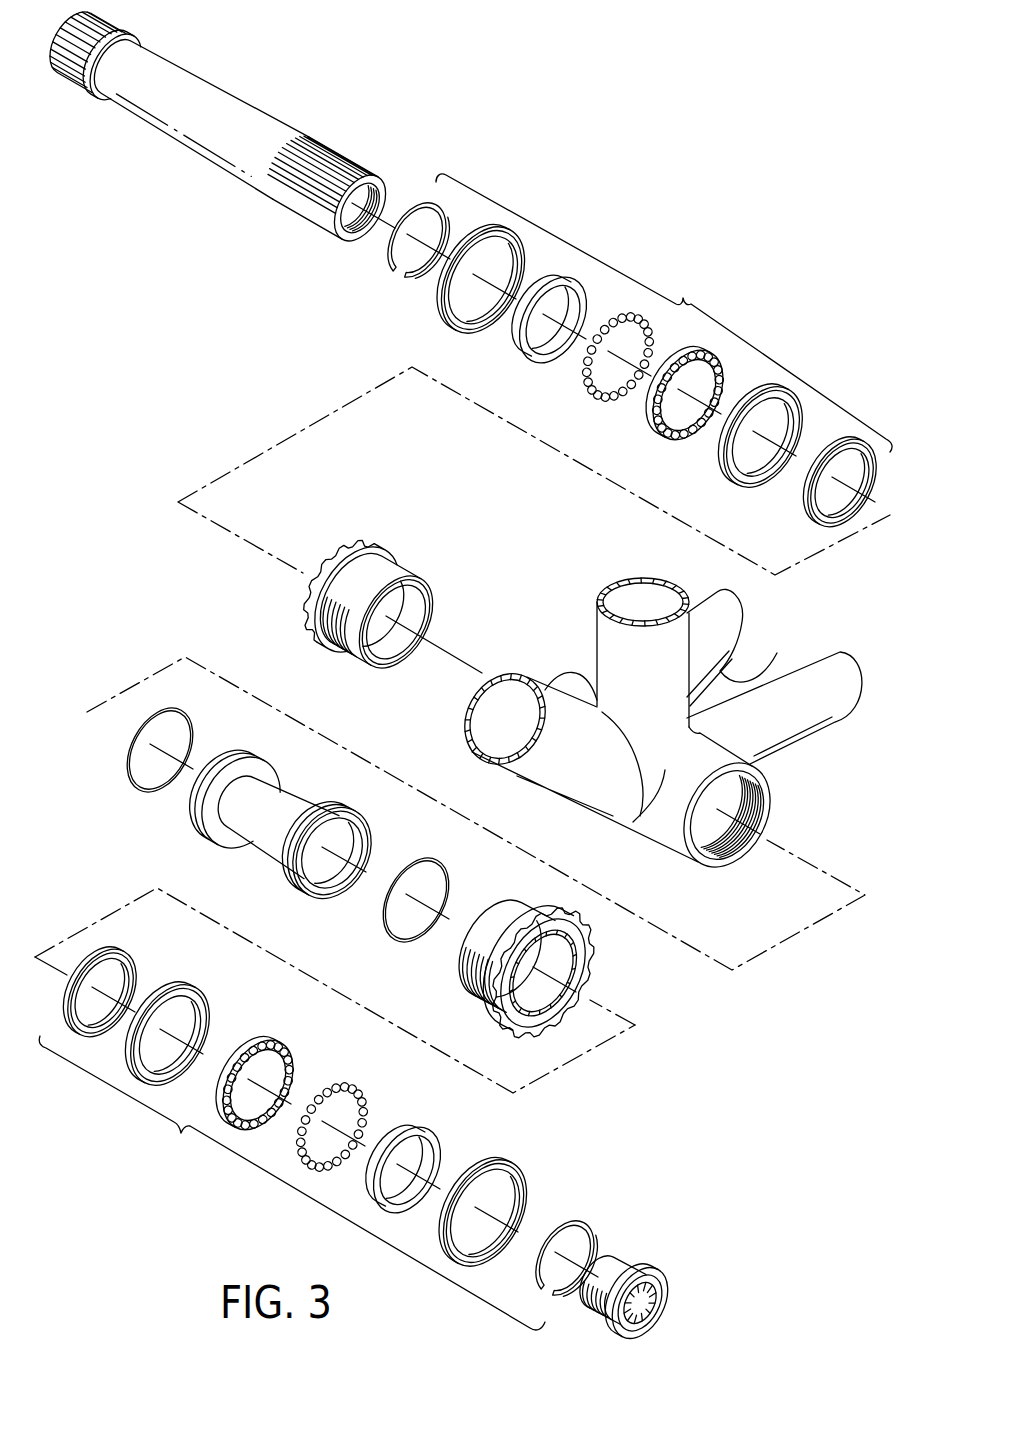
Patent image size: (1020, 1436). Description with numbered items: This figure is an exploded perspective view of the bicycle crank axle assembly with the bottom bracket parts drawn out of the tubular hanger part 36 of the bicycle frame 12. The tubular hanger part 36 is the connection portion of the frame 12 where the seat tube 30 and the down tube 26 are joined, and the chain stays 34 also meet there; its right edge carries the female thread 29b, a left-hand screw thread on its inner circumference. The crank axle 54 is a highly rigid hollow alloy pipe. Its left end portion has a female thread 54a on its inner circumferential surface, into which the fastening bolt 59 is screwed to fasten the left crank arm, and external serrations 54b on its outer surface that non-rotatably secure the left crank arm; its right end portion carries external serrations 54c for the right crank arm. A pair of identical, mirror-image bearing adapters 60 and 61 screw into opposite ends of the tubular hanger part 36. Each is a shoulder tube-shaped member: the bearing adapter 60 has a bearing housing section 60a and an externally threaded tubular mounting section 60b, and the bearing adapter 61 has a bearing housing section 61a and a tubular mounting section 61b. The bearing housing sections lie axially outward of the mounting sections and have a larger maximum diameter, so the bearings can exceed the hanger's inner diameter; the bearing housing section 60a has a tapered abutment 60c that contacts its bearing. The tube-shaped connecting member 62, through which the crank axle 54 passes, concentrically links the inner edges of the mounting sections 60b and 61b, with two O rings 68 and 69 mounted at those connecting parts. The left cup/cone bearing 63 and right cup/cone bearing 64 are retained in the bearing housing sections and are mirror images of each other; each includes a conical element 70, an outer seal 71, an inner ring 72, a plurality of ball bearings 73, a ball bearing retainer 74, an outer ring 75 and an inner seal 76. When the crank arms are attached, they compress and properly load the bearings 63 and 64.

The bicycle frame 12 is at (655, 731).
The down tube 26 is at (575, 782).
The female thread 29b is at (752, 806).
The seat tube 30 is at (605, 632).
The chain stays 34 is at (787, 681).
The tubular hanger part 36 is at (662, 826).
The crank axle 54 is at (226, 157).
The female thread 54a is at (360, 195).
The external serrations 54b is at (312, 207).
The external serrations 54c is at (76, 70).
The fastening bolt 59 is at (655, 1270).
The bearing adapter 60 is at (519, 984).
The bearing housing section 60a is at (503, 1030).
The tubular mounting section 60b is at (474, 966).
The tapered abutment 60c is at (590, 964).
The bearing adapter 61 is at (359, 627).
The bearing housing section 61a is at (318, 650).
The tubular mounting section 61b is at (364, 664).
The tube-shaped connecting member 62 is at (262, 862).
The cup/cone bearing 63 is at (292, 1183).
The cup/cone bearing 64 is at (664, 313).
The O ring 68 is at (132, 790).
The O ring 69 is at (386, 935).
The conical element 70 is at (392, 266).
The outer seal 71 is at (448, 315).
The inner ring 72 is at (520, 352).
The ball bearings 73 is at (590, 381).
The ball bearing retainer 74 is at (655, 425).
The outer ring 75 is at (732, 474).
The inner seal 76 is at (805, 516).